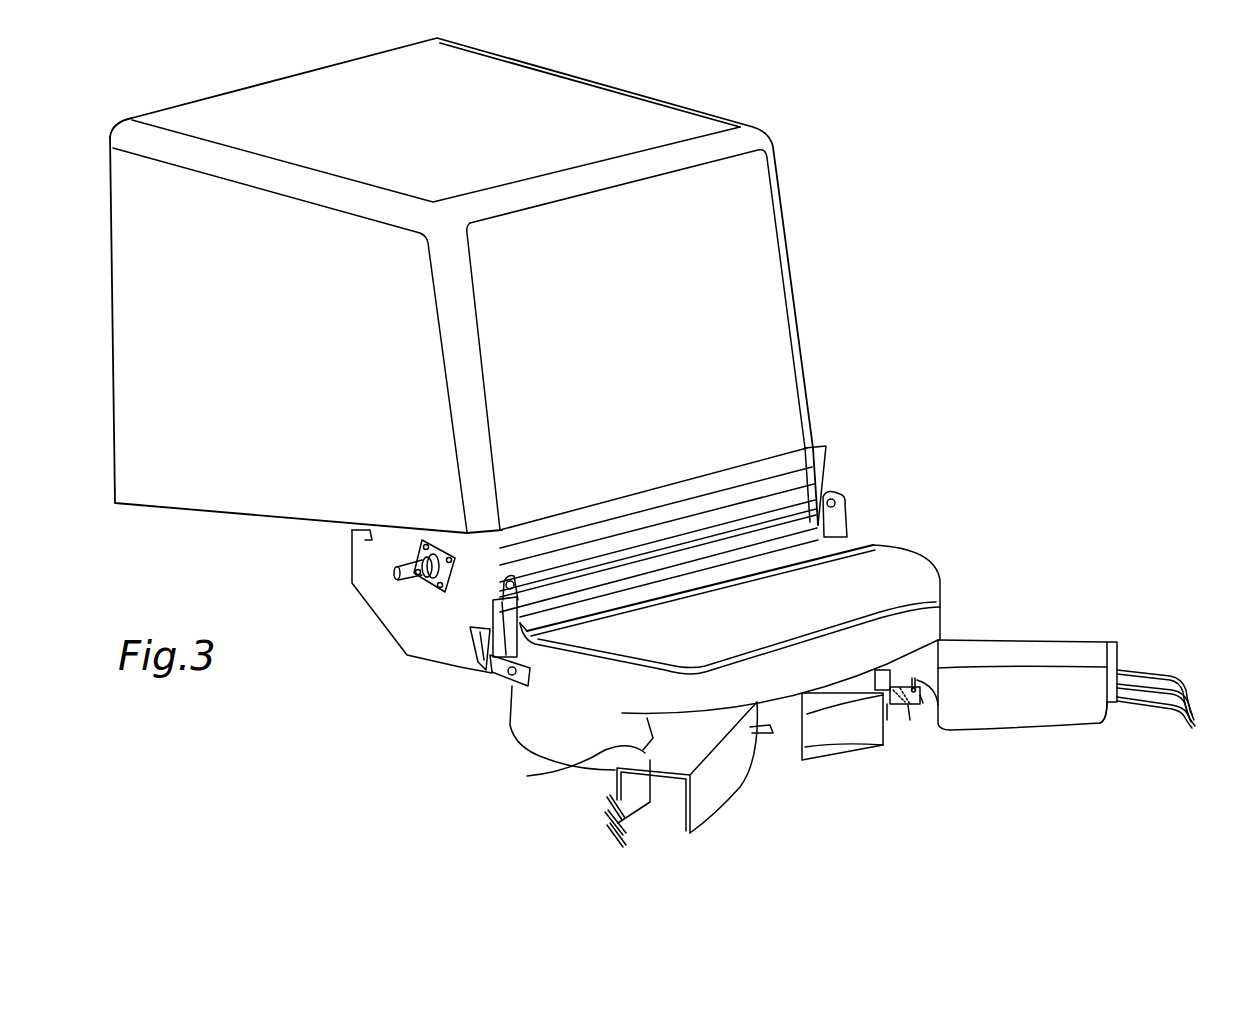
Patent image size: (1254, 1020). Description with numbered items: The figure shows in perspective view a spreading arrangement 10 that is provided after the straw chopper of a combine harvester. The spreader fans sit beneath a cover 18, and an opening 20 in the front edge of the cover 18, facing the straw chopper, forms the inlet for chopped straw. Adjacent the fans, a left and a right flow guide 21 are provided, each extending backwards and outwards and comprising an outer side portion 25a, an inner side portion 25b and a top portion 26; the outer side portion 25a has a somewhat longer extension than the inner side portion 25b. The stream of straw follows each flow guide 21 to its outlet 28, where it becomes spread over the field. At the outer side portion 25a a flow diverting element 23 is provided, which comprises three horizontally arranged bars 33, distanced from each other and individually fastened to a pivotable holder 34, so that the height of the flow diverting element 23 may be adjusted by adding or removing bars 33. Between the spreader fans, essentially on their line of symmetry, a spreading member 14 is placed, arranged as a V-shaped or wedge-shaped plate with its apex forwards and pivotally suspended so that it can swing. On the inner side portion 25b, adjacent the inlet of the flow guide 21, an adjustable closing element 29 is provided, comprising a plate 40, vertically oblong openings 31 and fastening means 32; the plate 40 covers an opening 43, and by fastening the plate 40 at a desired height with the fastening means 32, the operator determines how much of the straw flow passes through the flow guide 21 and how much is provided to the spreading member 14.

The spreading arrangement 10 is at (1012, 293).
The spreading member 14 is at (852, 722).
The cover 18 is at (913, 568).
The opening 20 is at (492, 690).
The flow guide 21 is at (703, 818).
The flow diverting element 23 is at (605, 835).
The outer side portion 25a is at (616, 767).
The inner side portion 25b is at (730, 793).
The top portion 26 is at (1033, 620).
The outlet 28 is at (1110, 710).
The adjustable closing element 29 is at (893, 672).
The oblong opening 31 is at (917, 704).
The fastening means 32 is at (912, 705).
The bar 33 is at (1188, 710).
The pivotable holder 34 is at (610, 797).
The plate 40 is at (913, 672).
The opening 43 is at (903, 708).